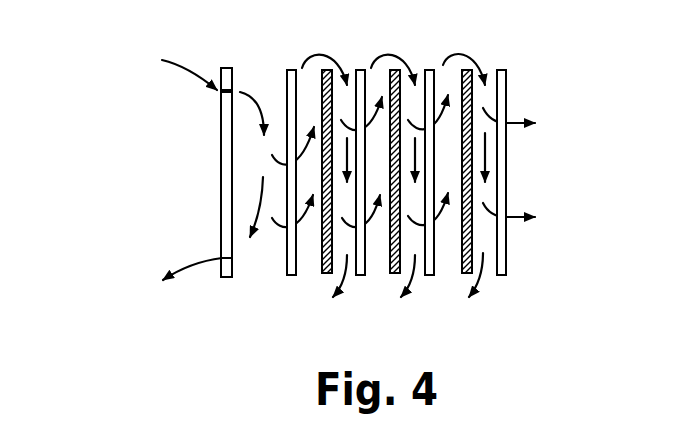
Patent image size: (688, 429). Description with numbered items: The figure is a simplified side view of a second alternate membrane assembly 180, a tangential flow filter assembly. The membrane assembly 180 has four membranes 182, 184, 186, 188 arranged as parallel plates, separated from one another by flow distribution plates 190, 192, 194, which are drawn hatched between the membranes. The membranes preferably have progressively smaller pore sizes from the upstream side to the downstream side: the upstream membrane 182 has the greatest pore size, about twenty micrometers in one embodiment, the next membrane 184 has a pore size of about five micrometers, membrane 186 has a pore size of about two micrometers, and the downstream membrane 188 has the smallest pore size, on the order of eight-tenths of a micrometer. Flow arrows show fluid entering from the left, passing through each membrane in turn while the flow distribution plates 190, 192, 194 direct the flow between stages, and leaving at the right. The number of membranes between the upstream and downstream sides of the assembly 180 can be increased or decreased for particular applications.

The membrane assembly 180 is at (157, 123).
The membrane 182 is at (293, 68).
The membrane 184 is at (362, 68).
The membrane 186 is at (428, 68).
The membrane 188 is at (500, 68).
The flow distribution plate 190 is at (323, 275).
The flow distribution plate 192 is at (391, 275).
The flow distribution plate 194 is at (462, 275).